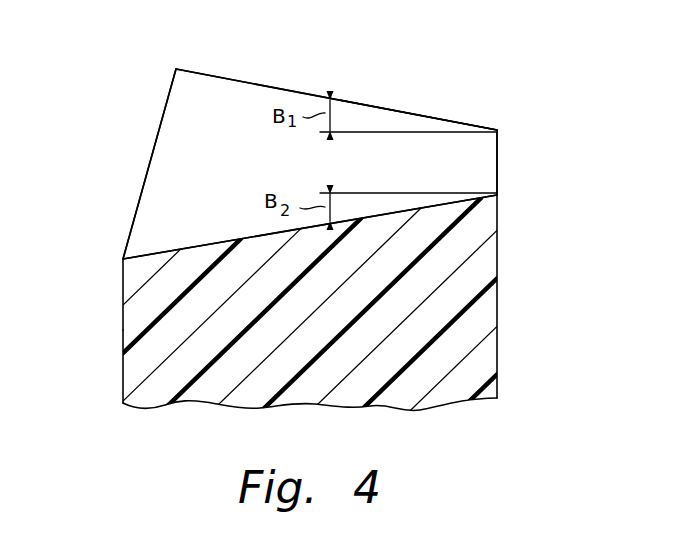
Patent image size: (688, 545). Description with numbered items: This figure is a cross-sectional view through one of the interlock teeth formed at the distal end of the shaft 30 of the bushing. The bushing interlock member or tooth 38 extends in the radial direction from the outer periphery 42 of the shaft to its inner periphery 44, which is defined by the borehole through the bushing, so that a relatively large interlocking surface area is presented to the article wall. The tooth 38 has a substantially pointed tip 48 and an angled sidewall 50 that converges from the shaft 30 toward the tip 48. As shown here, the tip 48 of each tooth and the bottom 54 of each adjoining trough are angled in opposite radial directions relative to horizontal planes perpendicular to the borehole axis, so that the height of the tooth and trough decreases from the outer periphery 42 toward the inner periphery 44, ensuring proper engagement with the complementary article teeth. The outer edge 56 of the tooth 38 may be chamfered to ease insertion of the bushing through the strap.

The shaft 30 is at (120, 308).
The bushing interlock member 38 is at (404, 105).
The outer periphery 42 is at (121, 333).
The inner periphery 44 is at (497, 268).
The tip 48 is at (219, 77).
The sidewall 50 is at (238, 130).
The bottom of trough 54 is at (192, 245).
The outer edge 56 is at (155, 143).